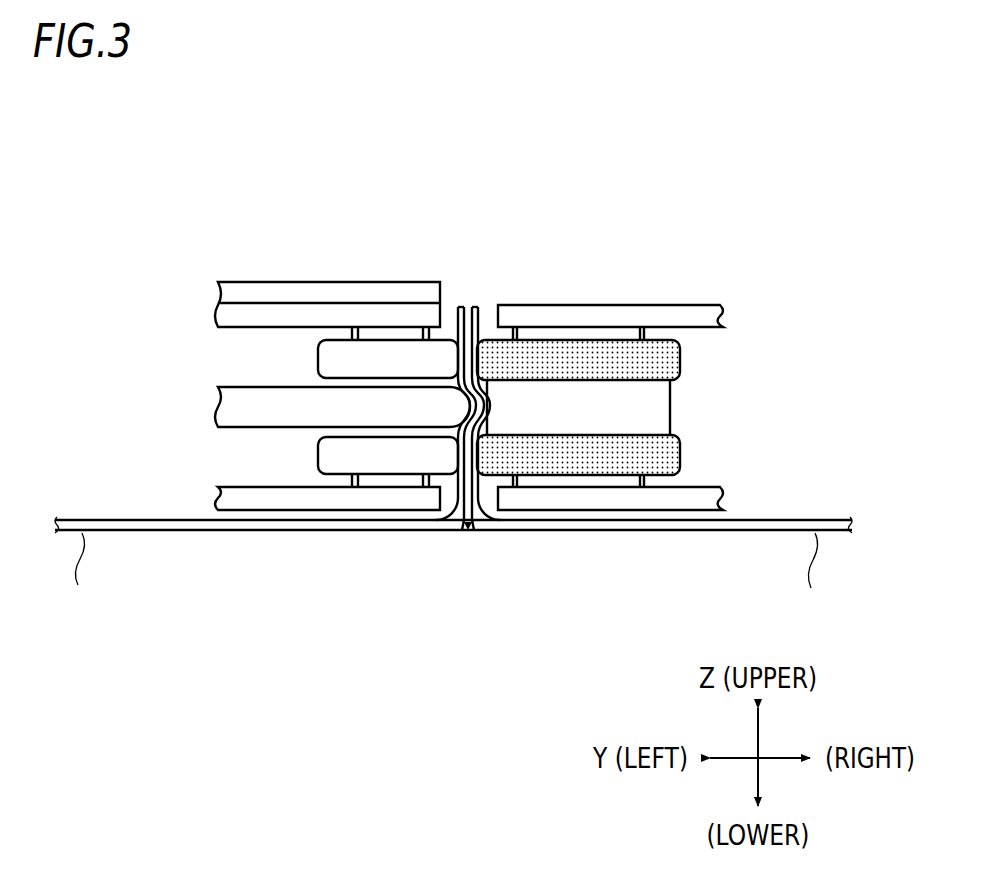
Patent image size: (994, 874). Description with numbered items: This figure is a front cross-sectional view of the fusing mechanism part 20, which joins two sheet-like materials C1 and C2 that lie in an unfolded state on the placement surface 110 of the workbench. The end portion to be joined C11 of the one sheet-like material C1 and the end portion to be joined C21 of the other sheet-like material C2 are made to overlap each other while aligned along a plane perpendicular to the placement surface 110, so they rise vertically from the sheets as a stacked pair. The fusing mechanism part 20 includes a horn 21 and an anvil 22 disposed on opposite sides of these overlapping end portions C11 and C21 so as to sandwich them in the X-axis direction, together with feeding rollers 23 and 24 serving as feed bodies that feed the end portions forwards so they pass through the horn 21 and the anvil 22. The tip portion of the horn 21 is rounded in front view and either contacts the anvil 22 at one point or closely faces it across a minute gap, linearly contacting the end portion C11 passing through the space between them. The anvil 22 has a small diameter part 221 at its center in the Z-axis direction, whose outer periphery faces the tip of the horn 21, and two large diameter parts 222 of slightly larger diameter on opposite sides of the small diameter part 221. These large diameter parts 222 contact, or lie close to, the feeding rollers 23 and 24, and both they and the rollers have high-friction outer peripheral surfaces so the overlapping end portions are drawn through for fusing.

The fusing mechanism part 20 is at (318, 158).
The horn 21 is at (280, 398).
The anvil 22 is at (752, 218).
The feeding roller 23 is at (318, 362).
The feeding roller 24 is at (318, 458).
The small diameter part 221 is at (582, 408).
The large diameter part 222 is at (537, 360).
The placement surface 110 is at (179, 532).
The sheet-like material C1 is at (93, 522).
The sheet-like material C2 is at (800, 520).
The end portion to be joined C11 is at (461, 306).
The end portion to be joined C21 is at (473, 306).